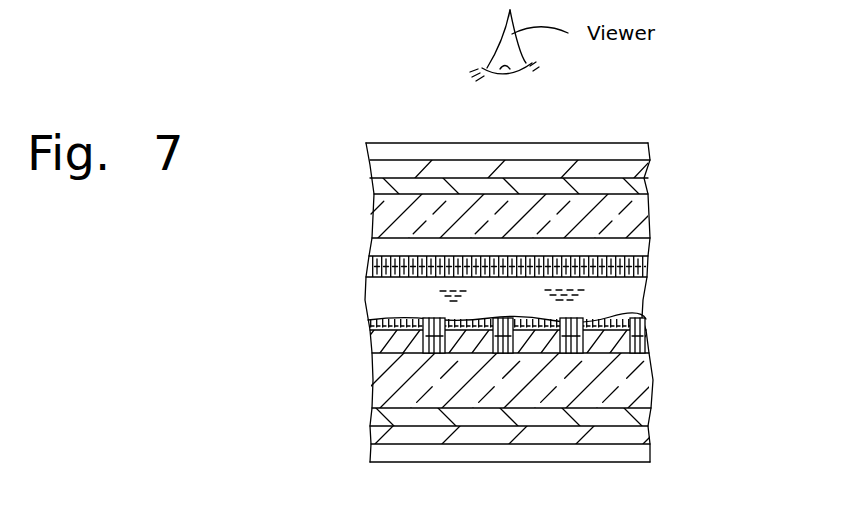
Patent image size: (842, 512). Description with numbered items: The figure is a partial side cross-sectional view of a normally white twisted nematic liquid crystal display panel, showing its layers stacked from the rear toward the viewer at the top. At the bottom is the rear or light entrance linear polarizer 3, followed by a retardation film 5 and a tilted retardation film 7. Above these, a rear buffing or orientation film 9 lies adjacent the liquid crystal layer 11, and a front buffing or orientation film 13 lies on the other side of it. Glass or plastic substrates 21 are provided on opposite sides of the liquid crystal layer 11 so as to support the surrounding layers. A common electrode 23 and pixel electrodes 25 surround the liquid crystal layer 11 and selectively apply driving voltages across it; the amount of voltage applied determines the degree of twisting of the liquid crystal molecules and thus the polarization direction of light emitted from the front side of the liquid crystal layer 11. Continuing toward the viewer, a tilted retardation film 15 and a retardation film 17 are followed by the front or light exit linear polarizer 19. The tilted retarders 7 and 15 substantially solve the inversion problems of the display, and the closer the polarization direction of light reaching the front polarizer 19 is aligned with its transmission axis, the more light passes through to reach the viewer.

The rear linear polarizer 3 is at (650, 455).
The retardation film 5 is at (648, 430).
The tilted retardation film 7 is at (645, 418).
The rear orientation film 9 is at (645, 318).
The liquid crystal layer 11 is at (650, 297).
The front orientation film 13 is at (650, 268).
The tilted retardation film 15 is at (652, 182).
The retardation film 17 is at (650, 159).
The front linear polarizer 19 is at (646, 143).
The substrates 21 is at (377, 215).
The common electrode 23 is at (650, 238).
The pixel electrodes 25 is at (453, 329).